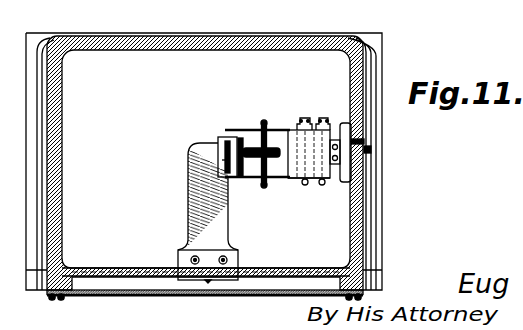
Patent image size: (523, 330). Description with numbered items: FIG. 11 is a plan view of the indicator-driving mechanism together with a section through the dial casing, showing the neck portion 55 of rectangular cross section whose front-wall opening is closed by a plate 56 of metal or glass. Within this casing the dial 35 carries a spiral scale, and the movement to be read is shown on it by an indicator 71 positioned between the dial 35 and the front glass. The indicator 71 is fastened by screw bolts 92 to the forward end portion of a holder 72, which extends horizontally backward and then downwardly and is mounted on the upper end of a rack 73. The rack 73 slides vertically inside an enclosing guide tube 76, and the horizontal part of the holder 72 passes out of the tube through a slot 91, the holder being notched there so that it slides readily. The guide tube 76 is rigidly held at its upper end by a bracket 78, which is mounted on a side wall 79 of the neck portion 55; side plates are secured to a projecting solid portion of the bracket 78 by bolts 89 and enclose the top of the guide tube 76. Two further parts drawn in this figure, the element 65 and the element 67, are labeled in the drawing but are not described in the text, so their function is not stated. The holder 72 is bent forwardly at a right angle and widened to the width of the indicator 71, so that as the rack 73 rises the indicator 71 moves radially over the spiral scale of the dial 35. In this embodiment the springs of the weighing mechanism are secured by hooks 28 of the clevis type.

The hooks 28 is at (491, 4).
The dial 35 is at (110, 269).
The neck portion 55 is at (200, 14).
The plate 56 is at (264, 294).
The solenoid coil 65 is at (272, 142).
The coil frame 67 is at (281, 182).
The indicator 71 is at (240, 262).
The holder 72 is at (228, 213).
The rack 73 is at (239, 143).
The guide tube 76 is at (225, 141).
The bracket 78 is at (355, 143).
The side wall 79 is at (362, 209).
The bolts 89 is at (316, 127).
The slot 91 is at (222, 143).
The screw bolts 92 is at (221, 258).